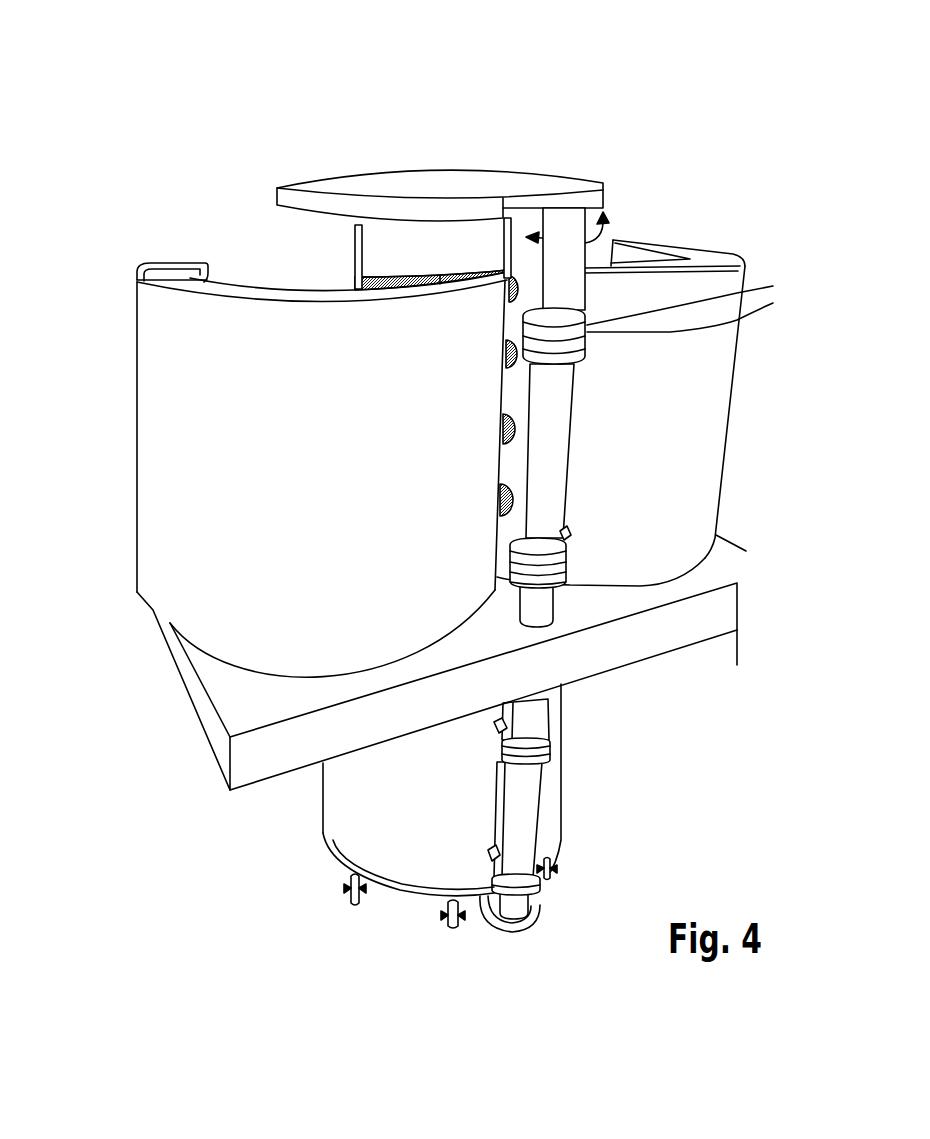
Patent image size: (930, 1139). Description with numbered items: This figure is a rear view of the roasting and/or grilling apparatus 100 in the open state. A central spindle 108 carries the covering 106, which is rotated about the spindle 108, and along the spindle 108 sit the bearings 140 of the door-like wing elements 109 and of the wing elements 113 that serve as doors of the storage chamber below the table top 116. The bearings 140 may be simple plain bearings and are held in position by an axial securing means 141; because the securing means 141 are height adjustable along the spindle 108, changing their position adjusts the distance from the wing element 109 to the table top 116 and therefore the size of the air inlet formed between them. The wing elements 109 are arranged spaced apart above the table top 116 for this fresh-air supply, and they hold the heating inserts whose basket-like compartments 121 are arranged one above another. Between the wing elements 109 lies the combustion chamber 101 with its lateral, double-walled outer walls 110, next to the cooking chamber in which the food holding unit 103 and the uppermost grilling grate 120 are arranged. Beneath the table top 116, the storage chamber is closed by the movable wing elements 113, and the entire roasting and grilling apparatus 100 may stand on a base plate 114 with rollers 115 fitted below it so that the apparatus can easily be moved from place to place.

The roasting and/or grilling apparatus 100 is at (227, 138).
The combustion chamber 101 is at (704, 258).
The food holding unit 103 is at (355, 245).
The covering 106 is at (457, 183).
The spindle 108 is at (542, 487).
The wing elements 109 is at (182, 443).
The outer walls 110 is at (137, 281).
The wing elements 113 is at (360, 813).
The base plate 114 is at (473, 913).
The rollers 115 is at (352, 897).
The table top 116 is at (728, 555).
The uppermost grilling grate 120 is at (355, 268).
The compartments 121 is at (178, 284).
The bearings 140 is at (698, 305).
The securing means 141 is at (590, 362).